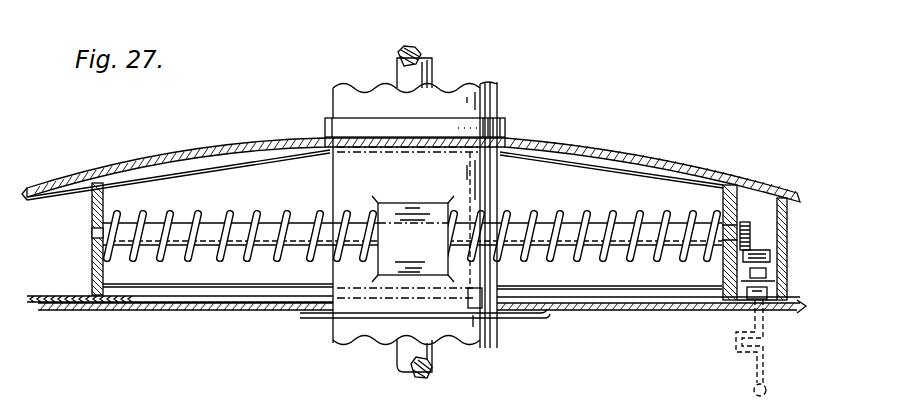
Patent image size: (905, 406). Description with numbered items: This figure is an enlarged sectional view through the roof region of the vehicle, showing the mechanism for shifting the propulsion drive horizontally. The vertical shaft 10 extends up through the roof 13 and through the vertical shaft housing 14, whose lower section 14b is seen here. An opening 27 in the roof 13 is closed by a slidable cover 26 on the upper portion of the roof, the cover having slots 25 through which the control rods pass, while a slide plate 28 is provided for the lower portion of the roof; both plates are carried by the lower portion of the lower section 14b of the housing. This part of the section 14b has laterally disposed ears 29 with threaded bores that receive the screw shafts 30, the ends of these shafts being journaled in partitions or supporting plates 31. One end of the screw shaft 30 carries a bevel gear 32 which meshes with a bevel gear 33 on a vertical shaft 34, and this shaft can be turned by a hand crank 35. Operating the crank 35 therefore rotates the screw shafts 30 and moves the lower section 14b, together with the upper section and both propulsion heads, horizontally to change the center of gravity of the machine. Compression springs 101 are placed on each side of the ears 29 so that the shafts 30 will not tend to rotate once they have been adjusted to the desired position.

The vertical shaft 10 is at (419, 50).
The roof 13 is at (32, 187).
The vertical shaft housing 14 is at (445, 197).
The lower section 14b is at (488, 186).
The slots 25 is at (413, 154).
The slidable cover 26 is at (654, 158).
The opening 27 is at (157, 173).
The slide plate 28 is at (147, 309).
The ears 29 is at (388, 211).
The screw shafts 30 is at (237, 250).
The supporting plates 31 is at (95, 182).
The bevel gear 32 is at (744, 224).
The bevel gear 33 is at (761, 249).
The vertical shaft 34 is at (750, 278).
The hand crank 35 is at (735, 346).
The compression springs 101 is at (258, 213).